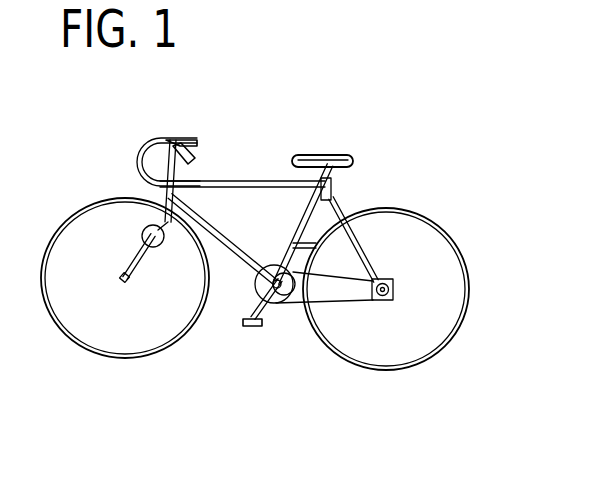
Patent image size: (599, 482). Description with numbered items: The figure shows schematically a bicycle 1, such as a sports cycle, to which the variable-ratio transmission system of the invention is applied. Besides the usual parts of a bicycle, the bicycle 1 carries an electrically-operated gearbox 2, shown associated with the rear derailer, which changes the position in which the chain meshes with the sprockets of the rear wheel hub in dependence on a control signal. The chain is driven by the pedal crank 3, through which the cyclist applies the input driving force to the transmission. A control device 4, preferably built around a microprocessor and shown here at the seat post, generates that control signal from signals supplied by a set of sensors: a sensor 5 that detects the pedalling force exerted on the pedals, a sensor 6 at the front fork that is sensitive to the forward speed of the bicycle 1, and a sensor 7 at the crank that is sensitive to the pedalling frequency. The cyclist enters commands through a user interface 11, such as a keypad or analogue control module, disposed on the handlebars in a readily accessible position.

The bicycle 1 is at (245, 168).
The electrically-operated gearbox 2 is at (393, 282).
The pedal crank 3 is at (267, 312).
The control device 4 is at (332, 190).
The sensor 5 is at (313, 273).
The sensor 6 is at (145, 228).
The sensor 7 is at (270, 263).
The user interface 11 is at (168, 140).